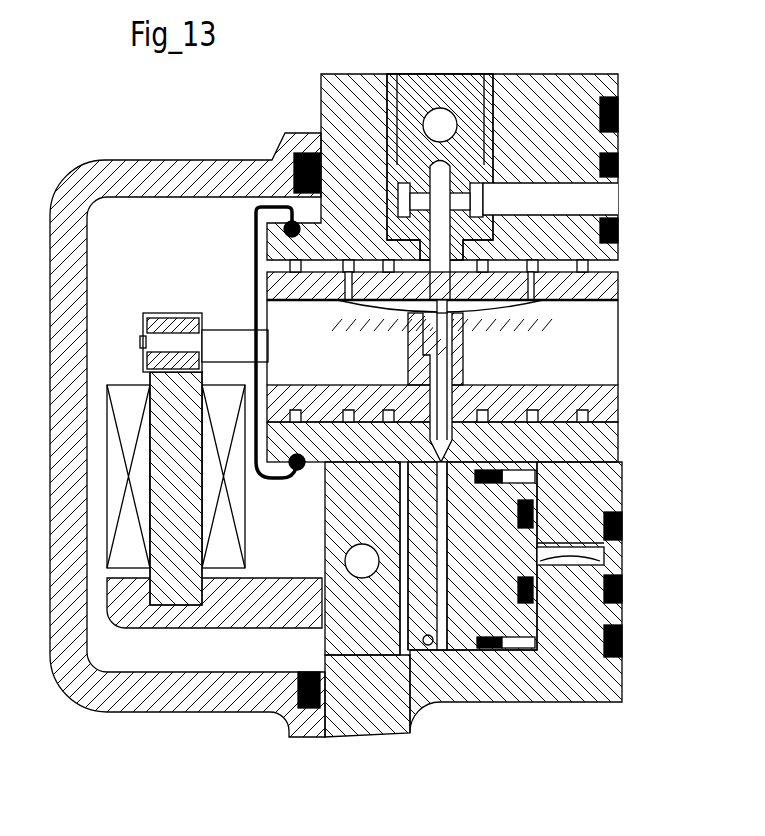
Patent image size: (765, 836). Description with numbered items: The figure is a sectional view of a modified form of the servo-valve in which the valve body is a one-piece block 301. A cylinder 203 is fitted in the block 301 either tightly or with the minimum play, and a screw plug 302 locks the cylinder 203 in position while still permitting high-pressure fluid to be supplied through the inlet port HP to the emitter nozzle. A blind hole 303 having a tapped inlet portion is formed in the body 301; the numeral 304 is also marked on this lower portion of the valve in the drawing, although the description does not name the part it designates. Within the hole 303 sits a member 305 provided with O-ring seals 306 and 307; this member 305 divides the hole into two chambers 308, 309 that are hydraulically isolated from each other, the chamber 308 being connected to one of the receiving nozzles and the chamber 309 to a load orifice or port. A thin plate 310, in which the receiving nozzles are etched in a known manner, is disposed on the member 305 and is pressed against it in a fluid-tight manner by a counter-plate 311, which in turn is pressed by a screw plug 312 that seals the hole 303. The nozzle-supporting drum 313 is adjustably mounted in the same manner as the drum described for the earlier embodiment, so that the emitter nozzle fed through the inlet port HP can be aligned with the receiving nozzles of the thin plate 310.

The one-piece block 301 is at (540, 95).
The screw plug 302 is at (470, 95).
The inlet port HP is at (622, 208).
The cylinder 203 is at (607, 277).
The nozzle-supporting drum 313 is at (600, 328).
The chamber 308 is at (533, 478).
The counter-plate 311 is at (418, 510).
The thin plate 310 is at (537, 545).
The chamber 309 is at (540, 557).
The O-ring seal 307 is at (532, 592).
The member 305 is at (495, 610).
The O-ring seal 306 is at (488, 650).
The blind hole 303 is at (432, 645).
The cylinder block 304 is at (372, 658).
The screw plug 312 is at (353, 627).